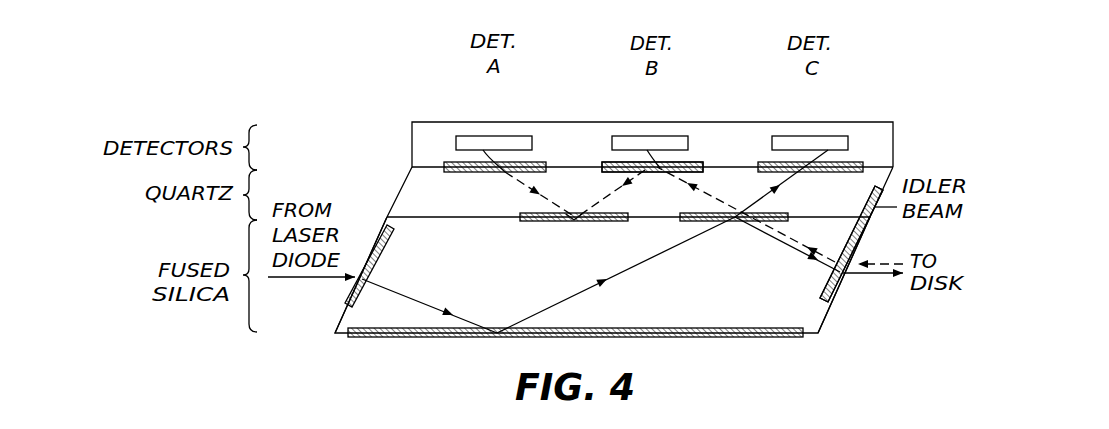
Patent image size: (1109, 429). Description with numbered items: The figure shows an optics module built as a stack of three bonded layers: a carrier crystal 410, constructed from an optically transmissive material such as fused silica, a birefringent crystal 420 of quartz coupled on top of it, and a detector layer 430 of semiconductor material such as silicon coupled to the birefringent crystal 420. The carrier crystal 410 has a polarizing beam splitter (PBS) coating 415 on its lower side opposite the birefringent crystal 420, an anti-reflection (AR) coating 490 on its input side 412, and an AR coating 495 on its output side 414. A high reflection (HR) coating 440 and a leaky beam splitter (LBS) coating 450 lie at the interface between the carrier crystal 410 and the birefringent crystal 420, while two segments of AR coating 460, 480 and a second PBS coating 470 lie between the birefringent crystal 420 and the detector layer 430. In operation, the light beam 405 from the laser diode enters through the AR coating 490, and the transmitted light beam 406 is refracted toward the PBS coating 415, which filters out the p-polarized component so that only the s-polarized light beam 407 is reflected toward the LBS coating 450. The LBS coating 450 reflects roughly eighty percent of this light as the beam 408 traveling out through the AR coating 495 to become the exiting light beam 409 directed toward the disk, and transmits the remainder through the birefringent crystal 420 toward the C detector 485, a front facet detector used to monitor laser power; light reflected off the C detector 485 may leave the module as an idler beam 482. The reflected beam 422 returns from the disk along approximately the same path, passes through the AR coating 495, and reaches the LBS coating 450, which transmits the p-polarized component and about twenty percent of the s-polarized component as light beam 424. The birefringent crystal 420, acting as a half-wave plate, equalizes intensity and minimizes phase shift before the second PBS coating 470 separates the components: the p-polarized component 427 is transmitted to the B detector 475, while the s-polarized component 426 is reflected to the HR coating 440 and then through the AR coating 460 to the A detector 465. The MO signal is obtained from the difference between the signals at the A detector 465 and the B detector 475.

The light beam 405 is at (278, 278).
The transmitted light beam 406 is at (425, 300).
The s-polarized light beam 407 is at (633, 279).
The beam directed to output window 408 is at (779, 256).
The exiting light beam 409 is at (876, 277).
The carrier crystal 410 is at (442, 248).
The input side 412 is at (341, 319).
The output side 414 is at (822, 325).
The polarizing beam splitter coating 415 is at (690, 340).
The birefringent crystal 420 is at (457, 205).
The reflected beam 422 is at (878, 263).
The light beam 424 is at (712, 200).
The s-polarized component 426 is at (600, 205).
The p-polarized component 427 is at (605, 162).
The detector layer 430 is at (412, 122).
The high reflection coating 440 is at (583, 223).
The leaky beam splitter coating 450 is at (731, 223).
The anti-reflection coating 460 is at (545, 162).
The A detector 465 is at (492, 136).
The second polarizing beam splitter coating 470 is at (700, 162).
The B detector 475 is at (654, 136).
The anti-reflection coating 480 is at (862, 162).
The idler beam 482 is at (887, 192).
The C detector 485 is at (814, 136).
The anti-reflection coating 490 is at (375, 232).
The anti-reflection coating 495 is at (845, 285).